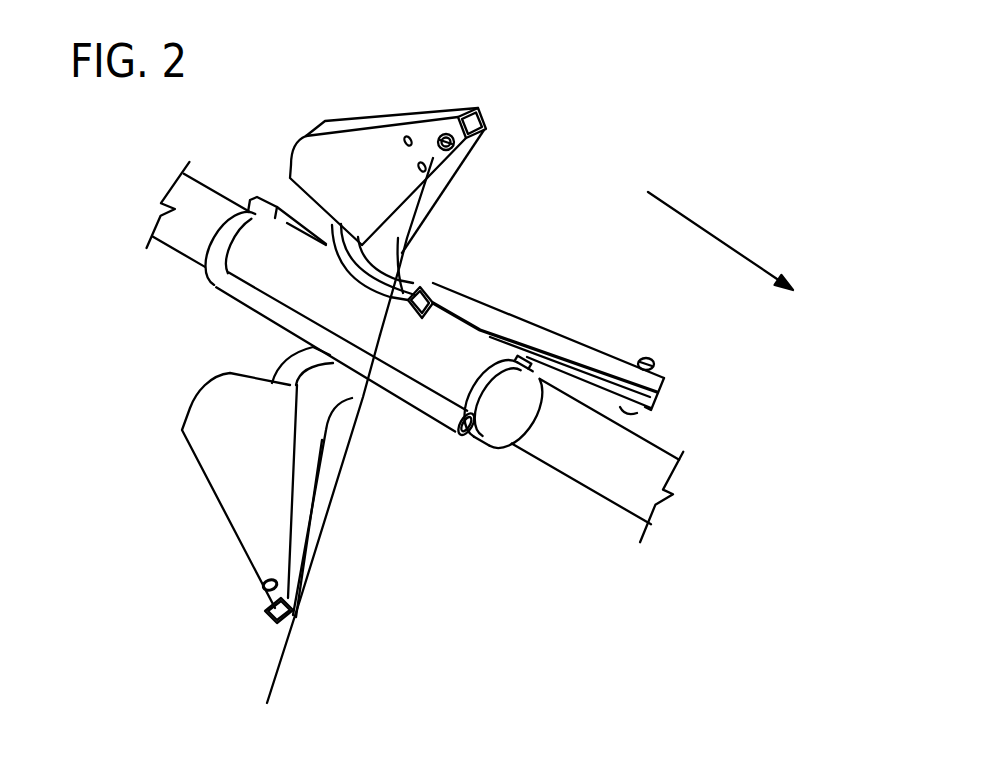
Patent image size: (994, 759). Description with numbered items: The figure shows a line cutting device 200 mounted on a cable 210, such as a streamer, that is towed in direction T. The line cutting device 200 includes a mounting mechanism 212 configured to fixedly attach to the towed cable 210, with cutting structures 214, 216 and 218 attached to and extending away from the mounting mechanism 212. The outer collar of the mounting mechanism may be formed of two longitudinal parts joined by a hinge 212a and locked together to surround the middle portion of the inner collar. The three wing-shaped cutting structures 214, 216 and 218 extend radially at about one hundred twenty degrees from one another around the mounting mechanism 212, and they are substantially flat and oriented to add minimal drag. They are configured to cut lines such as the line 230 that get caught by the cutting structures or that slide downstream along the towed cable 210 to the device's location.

The line cutting device 200 is at (578, 182).
The cable 210 is at (610, 502).
The mounting mechanism 212 is at (303, 293).
The hinge 212a is at (433, 408).
The cutting structure 214 is at (374, 119).
The cutting structure 216 is at (230, 453).
The cutting structure 218 is at (523, 335).
The line 230 is at (328, 508).